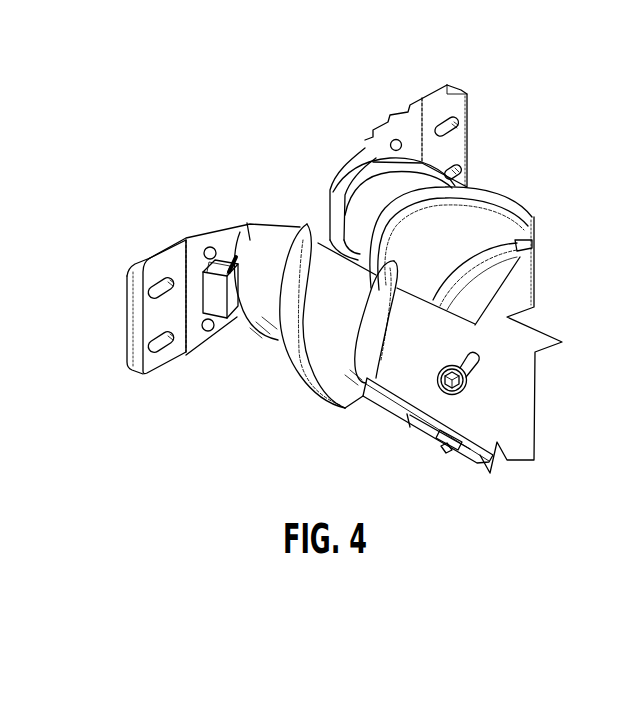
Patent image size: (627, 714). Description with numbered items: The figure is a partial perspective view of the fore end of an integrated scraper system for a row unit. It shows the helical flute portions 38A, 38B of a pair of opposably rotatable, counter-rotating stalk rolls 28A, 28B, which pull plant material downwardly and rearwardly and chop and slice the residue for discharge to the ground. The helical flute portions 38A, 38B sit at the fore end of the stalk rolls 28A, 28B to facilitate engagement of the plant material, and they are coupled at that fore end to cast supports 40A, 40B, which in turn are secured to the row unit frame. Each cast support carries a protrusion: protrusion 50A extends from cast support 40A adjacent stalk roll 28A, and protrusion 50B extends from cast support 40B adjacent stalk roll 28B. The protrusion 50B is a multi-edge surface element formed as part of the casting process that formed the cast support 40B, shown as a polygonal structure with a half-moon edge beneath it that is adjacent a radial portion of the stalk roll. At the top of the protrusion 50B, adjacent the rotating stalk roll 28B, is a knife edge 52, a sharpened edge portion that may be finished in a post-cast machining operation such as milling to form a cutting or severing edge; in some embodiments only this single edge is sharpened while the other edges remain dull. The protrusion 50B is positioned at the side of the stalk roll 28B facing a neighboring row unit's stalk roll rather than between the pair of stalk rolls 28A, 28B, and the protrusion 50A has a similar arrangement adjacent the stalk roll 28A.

The stalk roll 28A is at (523, 275).
The stalk roll 28B is at (480, 462).
The helical flute portion 38A is at (492, 188).
The helical flute portion 38B is at (312, 400).
The cast support 40A is at (417, 98).
The cast support 40B is at (172, 250).
The protrusion 50A is at (362, 143).
The protrusion 50B is at (230, 268).
The knife edge 52 is at (233, 266).